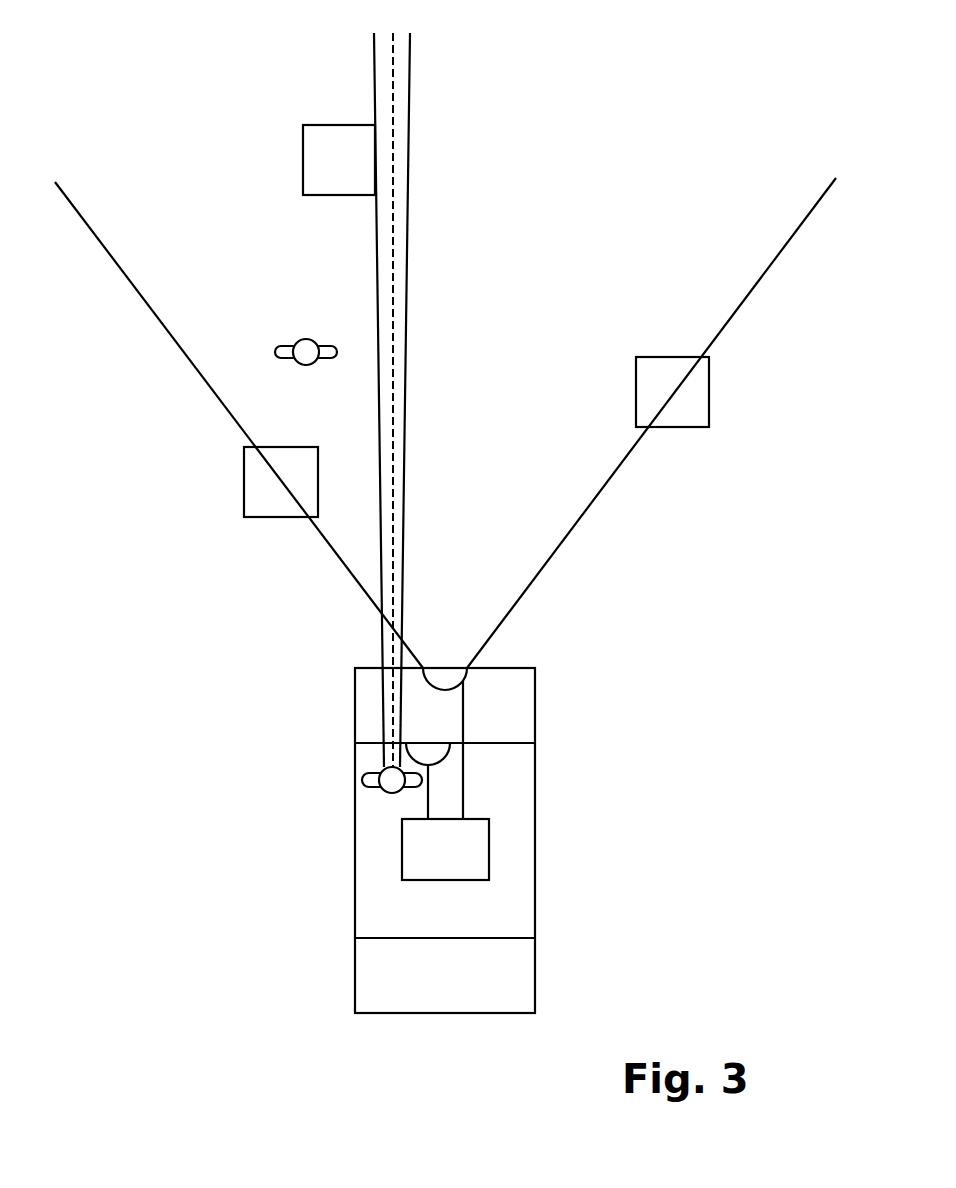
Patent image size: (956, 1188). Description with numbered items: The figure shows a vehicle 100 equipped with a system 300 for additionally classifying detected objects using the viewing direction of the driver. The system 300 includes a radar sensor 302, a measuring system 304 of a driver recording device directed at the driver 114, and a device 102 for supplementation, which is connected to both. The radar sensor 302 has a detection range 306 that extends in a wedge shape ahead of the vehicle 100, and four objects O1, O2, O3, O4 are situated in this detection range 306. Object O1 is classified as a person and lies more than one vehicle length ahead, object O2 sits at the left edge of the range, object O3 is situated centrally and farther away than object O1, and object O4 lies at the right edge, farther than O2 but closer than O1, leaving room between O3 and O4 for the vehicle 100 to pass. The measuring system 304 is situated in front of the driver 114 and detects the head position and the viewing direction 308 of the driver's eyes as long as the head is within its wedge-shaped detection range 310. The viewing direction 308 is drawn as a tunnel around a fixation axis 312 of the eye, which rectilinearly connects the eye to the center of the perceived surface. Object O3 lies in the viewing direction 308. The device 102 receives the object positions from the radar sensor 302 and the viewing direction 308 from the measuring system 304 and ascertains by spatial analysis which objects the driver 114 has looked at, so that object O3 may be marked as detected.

The vehicle 100 is at (535, 860).
The device for supplementation 102 is at (402, 850).
The driver 114 is at (381, 776).
The system 300 is at (568, 675).
The radar sensor 302 is at (445, 678).
The measuring system 304 is at (428, 752).
The detection range 306 is at (652, 145).
The viewing direction 308 is at (411, 128).
The detection range 310 is at (428, 806).
The fixation axis 312 is at (393, 68).
The object O1 is at (306, 339).
The object O2 is at (282, 447).
The object O3 is at (324, 125).
The object O4 is at (672, 357).